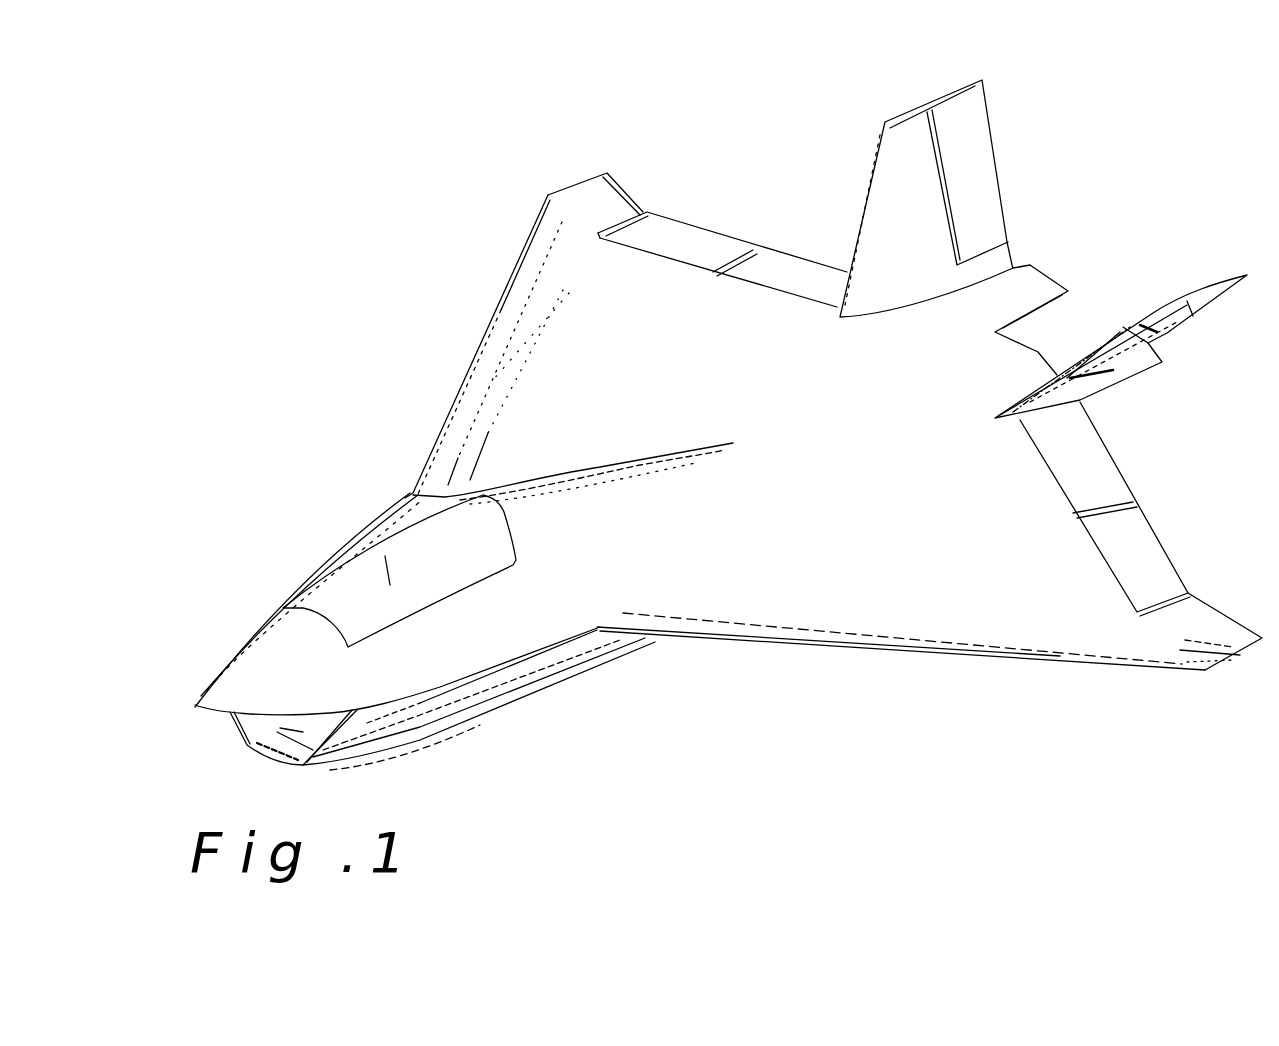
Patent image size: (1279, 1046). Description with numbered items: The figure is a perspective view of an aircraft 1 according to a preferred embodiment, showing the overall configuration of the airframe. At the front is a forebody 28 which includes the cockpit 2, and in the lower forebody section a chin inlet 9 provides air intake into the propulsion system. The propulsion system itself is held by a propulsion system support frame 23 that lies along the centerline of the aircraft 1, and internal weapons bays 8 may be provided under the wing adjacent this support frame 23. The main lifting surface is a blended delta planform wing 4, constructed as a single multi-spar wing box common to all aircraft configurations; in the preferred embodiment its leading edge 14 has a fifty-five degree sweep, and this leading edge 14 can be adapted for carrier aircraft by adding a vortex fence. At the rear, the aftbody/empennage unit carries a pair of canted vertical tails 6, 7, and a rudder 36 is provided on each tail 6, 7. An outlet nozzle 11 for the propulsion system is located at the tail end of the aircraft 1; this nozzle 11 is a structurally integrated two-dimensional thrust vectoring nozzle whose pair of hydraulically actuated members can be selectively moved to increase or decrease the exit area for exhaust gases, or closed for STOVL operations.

The aircraft 1 is at (378, 230).
The cockpit 2 is at (367, 573).
The blended delta planform wing 4 is at (650, 307).
The canted vertical tail 6 is at (890, 162).
The canted vertical tail 7 is at (1148, 344).
The internal weapons bay 8 is at (603, 647).
The chin inlet 9 is at (268, 733).
The outlet nozzle 11 is at (1050, 343).
The leading edge 14 is at (464, 347).
The propulsion system support frame 23 is at (473, 722).
The forebody 28 is at (274, 528).
The rudder 36 is at (982, 165).